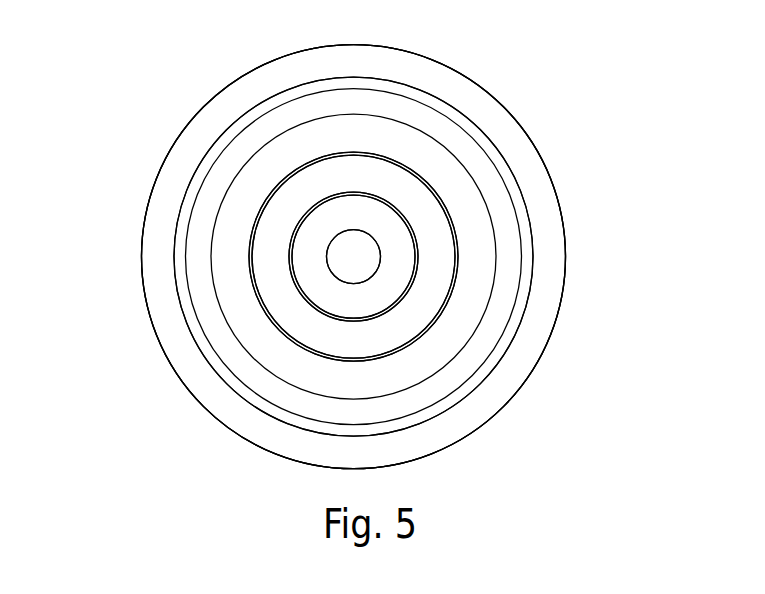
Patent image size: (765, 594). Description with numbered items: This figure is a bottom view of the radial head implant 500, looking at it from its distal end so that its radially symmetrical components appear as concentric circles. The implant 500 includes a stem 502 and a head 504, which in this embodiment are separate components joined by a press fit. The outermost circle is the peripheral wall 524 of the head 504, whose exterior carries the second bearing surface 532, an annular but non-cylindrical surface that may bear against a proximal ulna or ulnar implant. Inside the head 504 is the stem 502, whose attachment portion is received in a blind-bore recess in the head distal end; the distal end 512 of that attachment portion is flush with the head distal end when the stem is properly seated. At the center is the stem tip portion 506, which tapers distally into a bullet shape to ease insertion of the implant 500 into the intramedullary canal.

The radial head implant 500 is at (570, 65).
The second bearing surface 532 is at (538, 150).
The head 504 is at (557, 240).
The distal end of the attachment portion 512 is at (428, 280).
The tip portion 506 is at (341, 257).
The stem 502 is at (310, 288).
The peripheral wall 524 is at (200, 387).